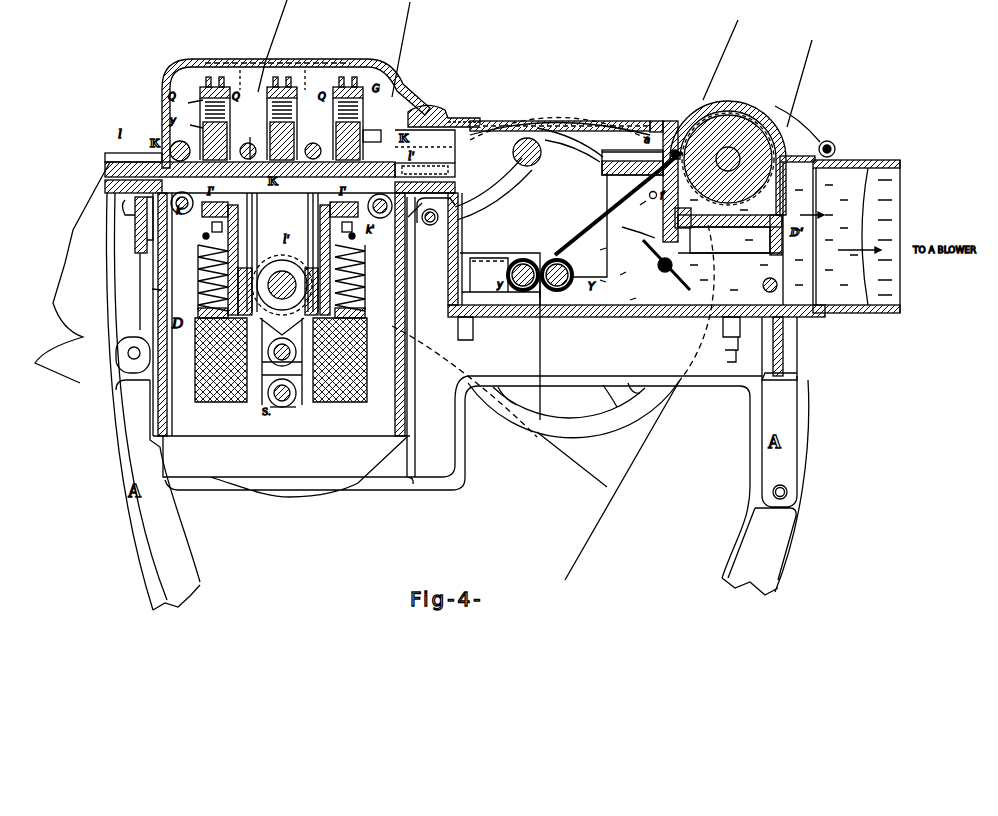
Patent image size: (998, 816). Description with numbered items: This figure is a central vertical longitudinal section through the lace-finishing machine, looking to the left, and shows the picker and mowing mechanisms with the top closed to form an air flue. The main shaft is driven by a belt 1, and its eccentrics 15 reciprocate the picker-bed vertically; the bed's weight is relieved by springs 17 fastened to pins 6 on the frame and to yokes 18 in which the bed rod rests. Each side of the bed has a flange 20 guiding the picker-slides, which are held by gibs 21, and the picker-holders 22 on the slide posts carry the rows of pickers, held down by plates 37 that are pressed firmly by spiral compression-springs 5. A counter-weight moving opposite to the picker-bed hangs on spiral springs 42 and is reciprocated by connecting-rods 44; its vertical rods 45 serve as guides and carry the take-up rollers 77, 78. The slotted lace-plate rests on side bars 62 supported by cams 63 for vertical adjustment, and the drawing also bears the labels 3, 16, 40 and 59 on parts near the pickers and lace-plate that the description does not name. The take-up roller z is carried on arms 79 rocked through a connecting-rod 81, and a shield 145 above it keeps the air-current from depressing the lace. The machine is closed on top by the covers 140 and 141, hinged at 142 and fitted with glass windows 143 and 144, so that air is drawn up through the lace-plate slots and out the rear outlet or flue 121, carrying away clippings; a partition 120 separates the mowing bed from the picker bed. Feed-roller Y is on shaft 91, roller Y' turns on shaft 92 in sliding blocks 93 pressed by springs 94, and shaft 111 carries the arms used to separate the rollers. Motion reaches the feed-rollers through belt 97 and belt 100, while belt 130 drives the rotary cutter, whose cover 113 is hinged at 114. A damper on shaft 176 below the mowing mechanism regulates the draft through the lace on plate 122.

The belt 1 is at (335, 48).
The roller 3 is at (530, 160).
The spiral compression-springs 5 is at (272, 86).
The pins 6 is at (281, 367).
The eccentrics 15 is at (560, 185).
The plate 16 is at (425, 138).
The springs 17 is at (198, 287).
The yokes 18 is at (293, 412).
The lip or flange 20 is at (212, 227).
The gibs 21 is at (204, 238).
The picker-holders 22 is at (186, 101).
The plates 37 is at (279, 114).
The block 40 is at (372, 136).
The spiral springs 42 is at (198, 262).
The connecting-rods 44 is at (278, 331).
The vertical rods 45 is at (282, 252).
The valve guide 59 is at (248, 123).
The side bars 62 is at (165, 156).
The cams 63 is at (381, 211).
The take-up roller 77 is at (253, 146).
The take-up roller 78 is at (431, 222).
The arms 79 is at (529, 174).
The connecting-rod 81 is at (632, 157).
The shaft 91 is at (572, 268).
The shaft 92 is at (526, 260).
The sliding blocks 93 is at (481, 269).
The spiral compression-springs 94 is at (501, 296).
The belt 97 is at (574, 388).
The belt 100 is at (553, 402).
The shaft 111 is at (783, 288).
The cover 113 is at (755, 108).
The hinge 114 is at (835, 149).
The partition 120 is at (500, 263).
The outlet or flue 121 is at (840, 234).
The plate 122 is at (618, 202).
The belt 130 is at (761, 81).
The cover 140 is at (185, 82).
The cover 141 is at (498, 121).
The hinge 142 is at (438, 112).
The glass window 143 is at (280, 66).
The glass window 144 is at (597, 121).
The shield 145 is at (560, 113).
The lever 176 is at (676, 271).